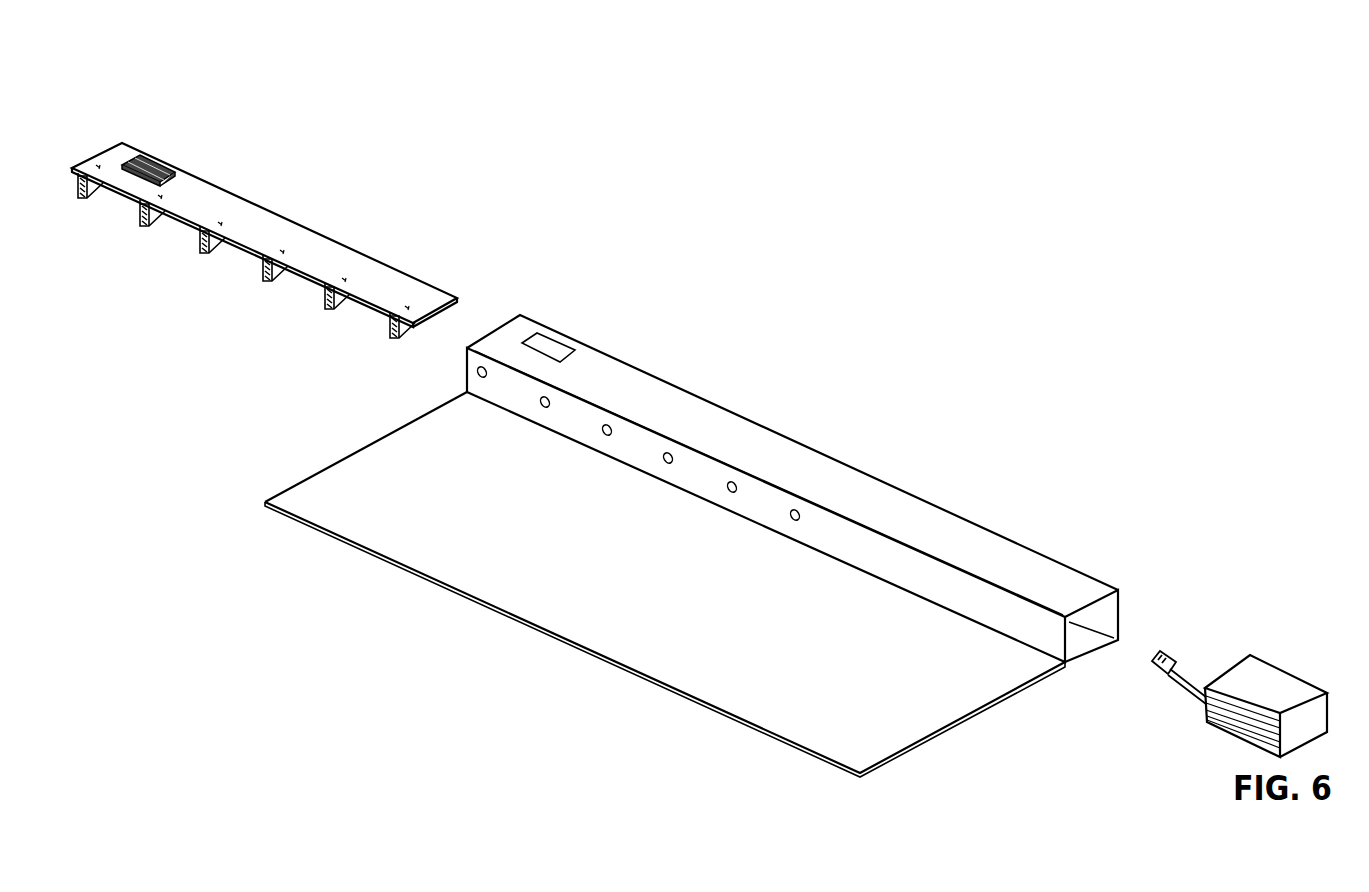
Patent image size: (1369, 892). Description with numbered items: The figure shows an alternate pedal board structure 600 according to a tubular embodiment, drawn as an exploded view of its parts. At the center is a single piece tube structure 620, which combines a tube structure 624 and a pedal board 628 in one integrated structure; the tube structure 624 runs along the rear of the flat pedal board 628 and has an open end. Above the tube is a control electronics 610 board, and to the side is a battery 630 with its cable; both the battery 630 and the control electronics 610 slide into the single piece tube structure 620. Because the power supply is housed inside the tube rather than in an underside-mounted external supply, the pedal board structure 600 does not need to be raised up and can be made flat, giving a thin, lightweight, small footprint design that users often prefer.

The pedal board structure 600 is at (997, 110).
The control electronics 610 is at (263, 237).
The single piece tube structure 620 is at (777, 458).
The tube structure 624 is at (1070, 569).
The pedal board 628 is at (870, 748).
The battery 630 is at (1268, 689).